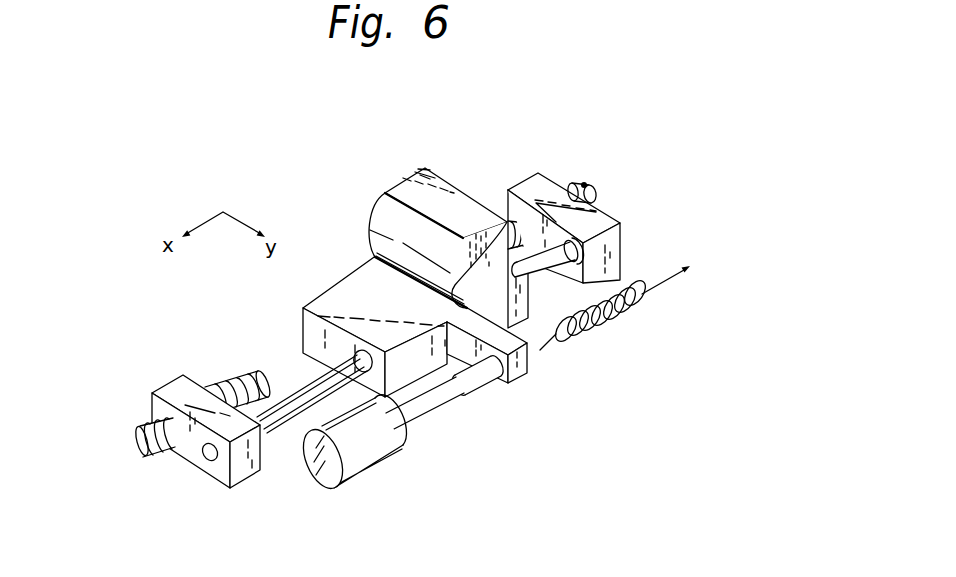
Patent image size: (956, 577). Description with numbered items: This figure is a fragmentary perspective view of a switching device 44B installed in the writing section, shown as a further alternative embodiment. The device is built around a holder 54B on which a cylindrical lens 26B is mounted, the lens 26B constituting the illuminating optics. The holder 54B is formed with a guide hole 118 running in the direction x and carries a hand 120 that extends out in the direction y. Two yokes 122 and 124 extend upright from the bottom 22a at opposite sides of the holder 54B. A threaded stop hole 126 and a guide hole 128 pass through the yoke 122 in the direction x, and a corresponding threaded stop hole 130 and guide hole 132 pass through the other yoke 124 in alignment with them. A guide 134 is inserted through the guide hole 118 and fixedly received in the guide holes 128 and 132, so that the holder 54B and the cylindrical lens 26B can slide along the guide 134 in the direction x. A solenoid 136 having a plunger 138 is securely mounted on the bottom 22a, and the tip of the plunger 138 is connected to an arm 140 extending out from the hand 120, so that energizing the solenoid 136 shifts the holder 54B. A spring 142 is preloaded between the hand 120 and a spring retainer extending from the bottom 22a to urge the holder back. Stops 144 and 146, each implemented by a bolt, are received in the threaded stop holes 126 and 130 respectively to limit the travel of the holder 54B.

The switching device 44B is at (550, 124).
The cylindrical lens 26B is at (383, 205).
The holder 54B is at (341, 287).
The guide hole 118 is at (330, 333).
The hand 120 is at (522, 368).
The yoke 122 is at (175, 395).
The yoke 124 is at (608, 218).
The threaded stop hole 126 is at (180, 458).
The guide hole 128 is at (215, 462).
The threaded stop hole 130 is at (509, 218).
The guide hole 132 is at (600, 250).
The guide 134 is at (270, 422).
The solenoid 136 is at (378, 446).
The plunger 138 is at (427, 418).
The arm 140 is at (490, 378).
The spring 142 is at (612, 328).
The stop 144 is at (163, 455).
The stop 146 is at (582, 182).
The bottom 22a is at (443, 420).